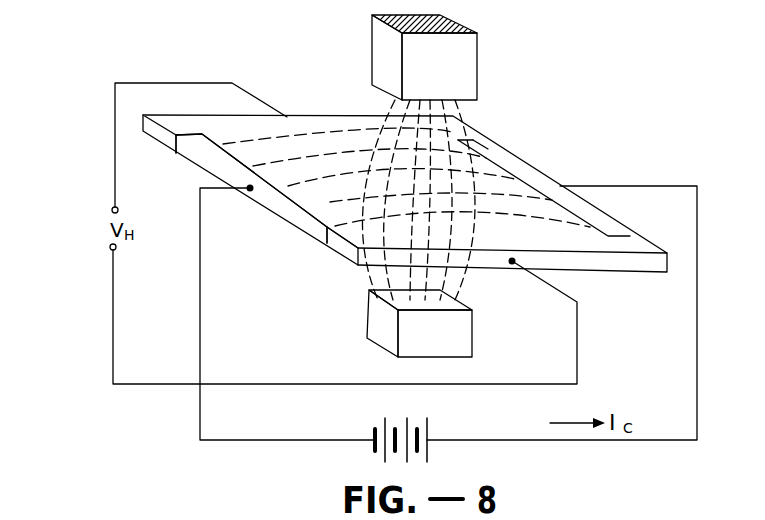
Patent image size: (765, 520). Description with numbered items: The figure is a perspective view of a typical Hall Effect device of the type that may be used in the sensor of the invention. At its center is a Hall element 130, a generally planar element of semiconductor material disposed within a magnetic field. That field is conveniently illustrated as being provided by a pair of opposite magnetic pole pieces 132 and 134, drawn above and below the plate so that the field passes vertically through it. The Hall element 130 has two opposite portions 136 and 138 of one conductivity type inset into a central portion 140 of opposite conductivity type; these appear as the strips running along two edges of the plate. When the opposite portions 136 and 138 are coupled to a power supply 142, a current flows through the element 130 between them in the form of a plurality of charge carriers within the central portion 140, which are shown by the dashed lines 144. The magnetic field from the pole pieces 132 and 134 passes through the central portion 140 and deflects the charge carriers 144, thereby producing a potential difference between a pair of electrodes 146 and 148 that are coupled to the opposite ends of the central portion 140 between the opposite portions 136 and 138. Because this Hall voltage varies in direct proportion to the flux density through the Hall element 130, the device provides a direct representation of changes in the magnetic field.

The Hall element 130 is at (541, 181).
The magnetic pole piece 132 is at (463, 71).
The magnetic pole piece 134 is at (460, 337).
The opposite portion 136 is at (303, 222).
The opposite portion 138 is at (607, 223).
The central portion 140 is at (613, 262).
The power supply 142 is at (430, 424).
The charge carriers 144 is at (512, 196).
The electrode 146 is at (112, 209).
The electrode 148 is at (110, 247).